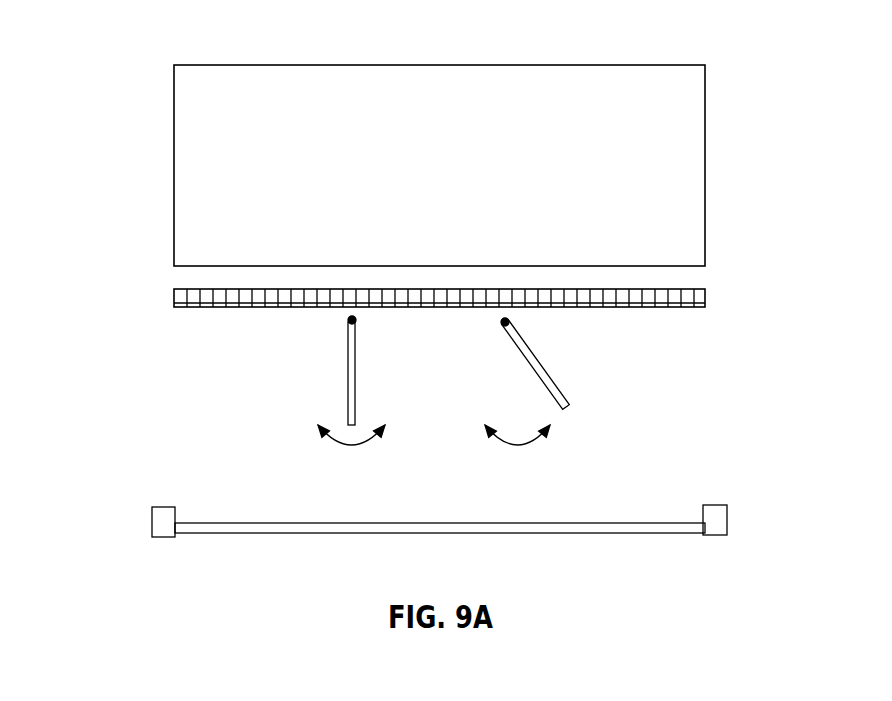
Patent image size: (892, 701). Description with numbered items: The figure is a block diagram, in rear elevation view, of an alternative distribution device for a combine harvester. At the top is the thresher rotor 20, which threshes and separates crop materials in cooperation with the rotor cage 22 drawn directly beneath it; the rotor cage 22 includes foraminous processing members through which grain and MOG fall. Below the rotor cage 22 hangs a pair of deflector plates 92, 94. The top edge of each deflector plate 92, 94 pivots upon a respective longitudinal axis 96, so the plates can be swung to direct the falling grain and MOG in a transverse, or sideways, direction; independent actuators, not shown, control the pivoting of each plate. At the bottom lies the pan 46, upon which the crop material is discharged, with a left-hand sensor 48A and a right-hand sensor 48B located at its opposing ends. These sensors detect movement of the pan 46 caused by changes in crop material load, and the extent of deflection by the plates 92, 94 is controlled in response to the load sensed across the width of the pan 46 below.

The thresher rotor 20 is at (185, 164).
The rotor cage 22 is at (172, 296).
The pan 46 is at (223, 535).
The sensor 48A is at (158, 524).
The sensor 48B is at (723, 522).
The deflector plate 92 is at (348, 358).
The deflector plate 94 is at (550, 370).
The longitudinal axis 96 is at (503, 322).